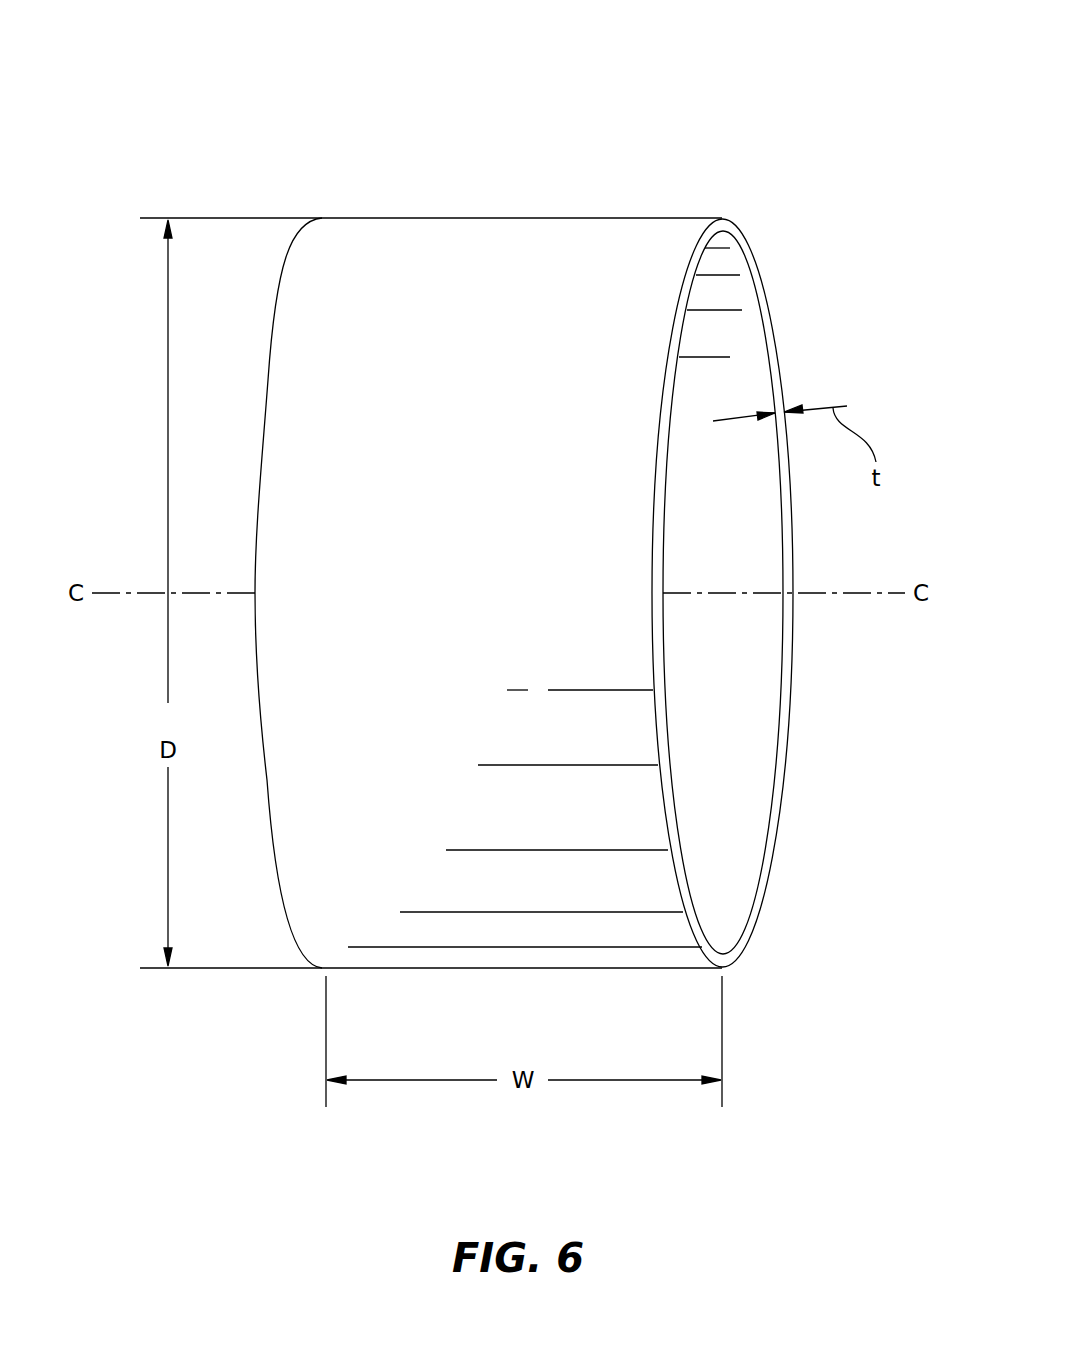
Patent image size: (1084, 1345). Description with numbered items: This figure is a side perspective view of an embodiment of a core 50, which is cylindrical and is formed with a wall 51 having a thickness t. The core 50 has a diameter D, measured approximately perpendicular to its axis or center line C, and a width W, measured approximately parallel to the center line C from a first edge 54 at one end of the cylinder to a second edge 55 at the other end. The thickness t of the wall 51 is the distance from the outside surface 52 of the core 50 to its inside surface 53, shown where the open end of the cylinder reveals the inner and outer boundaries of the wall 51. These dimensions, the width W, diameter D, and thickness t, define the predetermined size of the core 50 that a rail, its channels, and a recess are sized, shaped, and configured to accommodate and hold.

The core 50 is at (318, 206).
The wall 51 is at (752, 256).
The outside surface 52 is at (545, 258).
The inside surface 53 is at (727, 356).
The first edge 54 is at (282, 316).
The second edge 55 is at (788, 645).